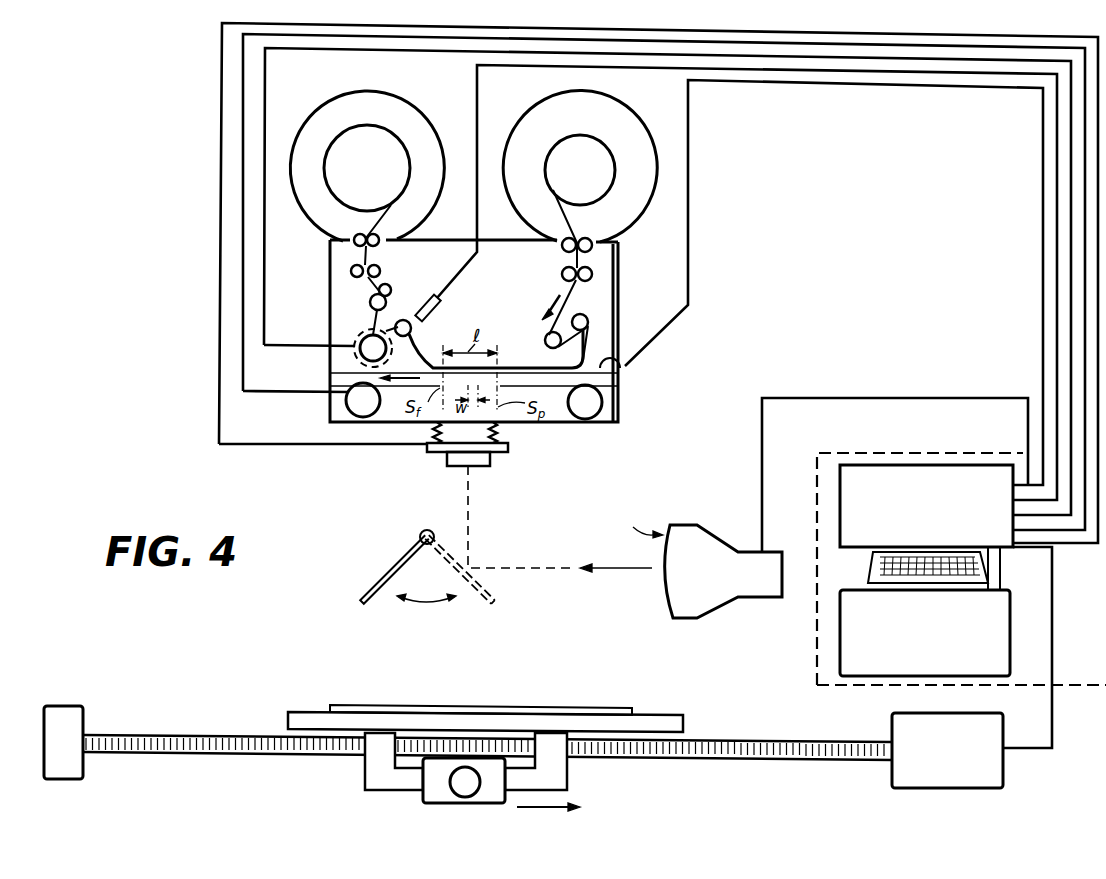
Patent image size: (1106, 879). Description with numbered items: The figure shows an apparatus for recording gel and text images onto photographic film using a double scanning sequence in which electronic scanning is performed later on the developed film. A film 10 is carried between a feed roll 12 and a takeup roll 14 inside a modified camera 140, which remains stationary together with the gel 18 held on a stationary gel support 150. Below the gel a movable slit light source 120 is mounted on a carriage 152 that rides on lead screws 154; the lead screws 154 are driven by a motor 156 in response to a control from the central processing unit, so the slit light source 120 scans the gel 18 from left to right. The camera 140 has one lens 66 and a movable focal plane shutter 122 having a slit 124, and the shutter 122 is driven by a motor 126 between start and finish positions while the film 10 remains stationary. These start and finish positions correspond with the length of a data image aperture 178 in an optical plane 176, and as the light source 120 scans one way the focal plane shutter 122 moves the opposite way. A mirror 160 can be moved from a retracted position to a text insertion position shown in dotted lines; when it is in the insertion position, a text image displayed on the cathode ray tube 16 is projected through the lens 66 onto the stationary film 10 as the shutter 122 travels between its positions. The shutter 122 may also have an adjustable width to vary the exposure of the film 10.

The film 10 is at (553, 203).
The feed roll 12 is at (591, 173).
The takeup roll 14 is at (378, 170).
The cathode ray tube 16 is at (717, 581).
The gel 18 is at (588, 706).
The lens 66 is at (508, 449).
The movable slit light source 120 is at (421, 775).
The movable focal plane shutter 122 is at (395, 388).
The slit 124 is at (587, 419).
The motor 126 is at (347, 406).
The camera 140 is at (526, 278).
The gel support 150 is at (656, 713).
The carriage 152 is at (568, 772).
The lead screws 154 is at (747, 744).
The motor 156 is at (963, 754).
The mirror 160 is at (393, 561).
The optical plane 176 is at (626, 366).
The data image aperture 178 is at (446, 368).